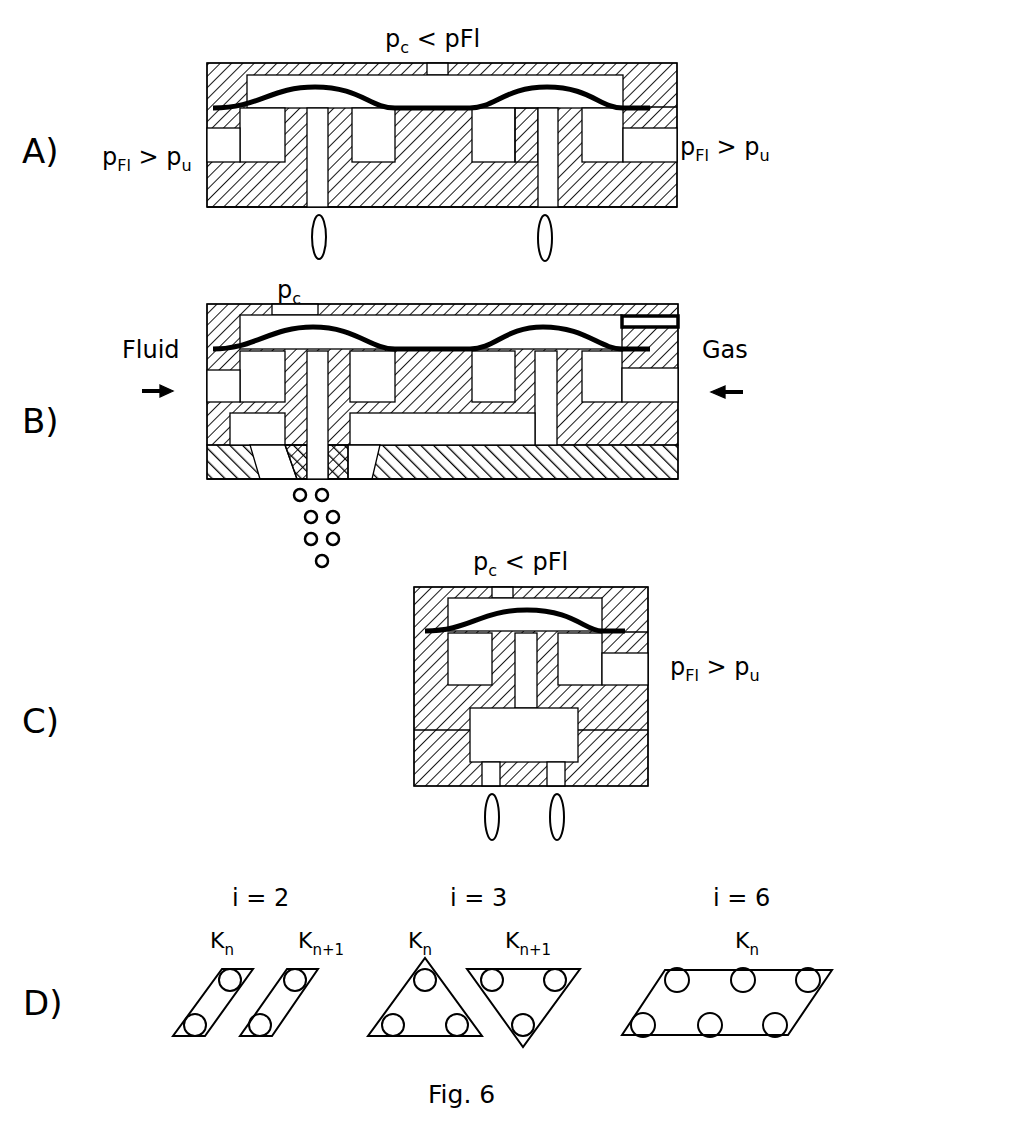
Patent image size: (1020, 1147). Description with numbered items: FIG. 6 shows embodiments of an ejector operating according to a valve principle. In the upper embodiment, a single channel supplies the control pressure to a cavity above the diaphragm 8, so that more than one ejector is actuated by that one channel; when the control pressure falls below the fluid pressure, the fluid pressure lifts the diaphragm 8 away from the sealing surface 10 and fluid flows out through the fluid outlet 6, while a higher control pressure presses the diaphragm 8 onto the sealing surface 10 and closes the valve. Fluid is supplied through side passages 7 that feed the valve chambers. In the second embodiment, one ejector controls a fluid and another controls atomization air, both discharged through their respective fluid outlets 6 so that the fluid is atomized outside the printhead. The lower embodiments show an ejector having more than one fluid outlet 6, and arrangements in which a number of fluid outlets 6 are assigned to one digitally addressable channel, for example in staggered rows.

The fluid outlet 6 is at (317, 193).
The fluid inlet channel 7 is at (230, 140).
The diaphragm 8 is at (590, 97).
The sealing surface 10 is at (525, 108).